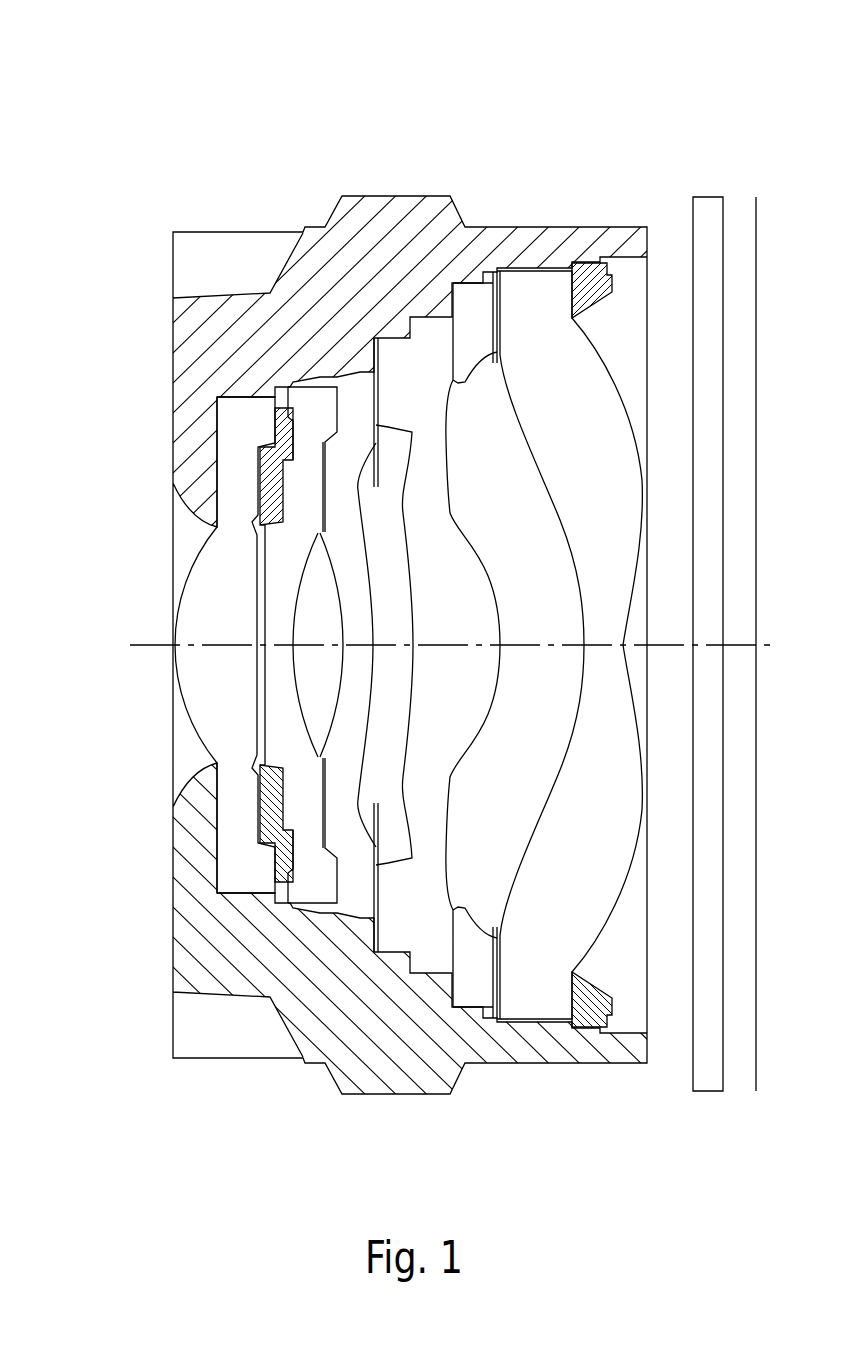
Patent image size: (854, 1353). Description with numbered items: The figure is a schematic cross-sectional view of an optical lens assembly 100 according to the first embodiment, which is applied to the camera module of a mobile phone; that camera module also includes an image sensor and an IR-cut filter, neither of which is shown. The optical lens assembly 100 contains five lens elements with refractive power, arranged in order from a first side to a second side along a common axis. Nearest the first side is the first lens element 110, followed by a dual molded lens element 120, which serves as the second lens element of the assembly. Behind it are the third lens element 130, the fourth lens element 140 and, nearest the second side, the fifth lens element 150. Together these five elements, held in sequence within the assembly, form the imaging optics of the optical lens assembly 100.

The optical lens assembly 100 is at (100, 82).
The first lens element 110 is at (238, 415).
The dual molded lens element 120 is at (303, 407).
The third lens element 130 is at (352, 395).
The fourth lens element 140 is at (432, 342).
The fifth lens element 150 is at (532, 310).